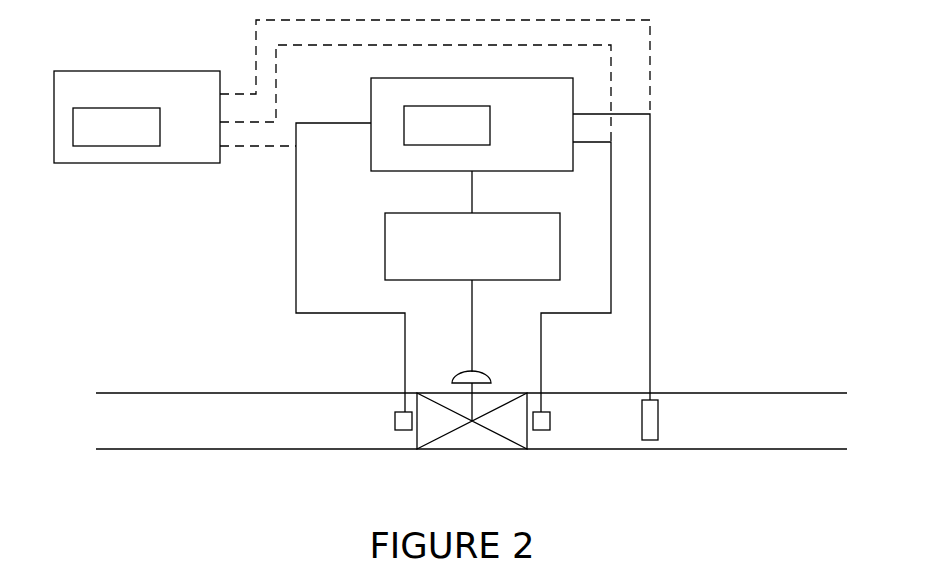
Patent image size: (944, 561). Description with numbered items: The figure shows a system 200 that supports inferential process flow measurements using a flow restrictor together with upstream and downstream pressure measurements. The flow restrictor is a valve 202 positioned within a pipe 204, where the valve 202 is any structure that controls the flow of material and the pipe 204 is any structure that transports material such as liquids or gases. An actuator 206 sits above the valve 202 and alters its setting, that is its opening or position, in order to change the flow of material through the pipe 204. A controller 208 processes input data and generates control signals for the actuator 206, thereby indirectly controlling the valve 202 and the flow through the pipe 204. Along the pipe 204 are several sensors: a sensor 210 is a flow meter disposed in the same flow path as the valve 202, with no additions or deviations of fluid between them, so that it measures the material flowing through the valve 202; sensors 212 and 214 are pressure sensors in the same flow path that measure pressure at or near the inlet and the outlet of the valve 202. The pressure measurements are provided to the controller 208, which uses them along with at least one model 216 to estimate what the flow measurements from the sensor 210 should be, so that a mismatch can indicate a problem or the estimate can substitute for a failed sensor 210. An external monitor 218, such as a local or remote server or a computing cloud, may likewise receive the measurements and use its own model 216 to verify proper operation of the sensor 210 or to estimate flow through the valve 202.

The system 200 is at (722, 55).
The valve 202 is at (445, 443).
The pipe 204 is at (260, 451).
The actuator 206 is at (548, 275).
The controller 208 is at (558, 166).
The sensor 210 is at (651, 443).
The sensor 212 is at (398, 410).
The sensor 214 is at (541, 433).
The model 216 is at (281, 126).
The external monitor 218 is at (150, 168).